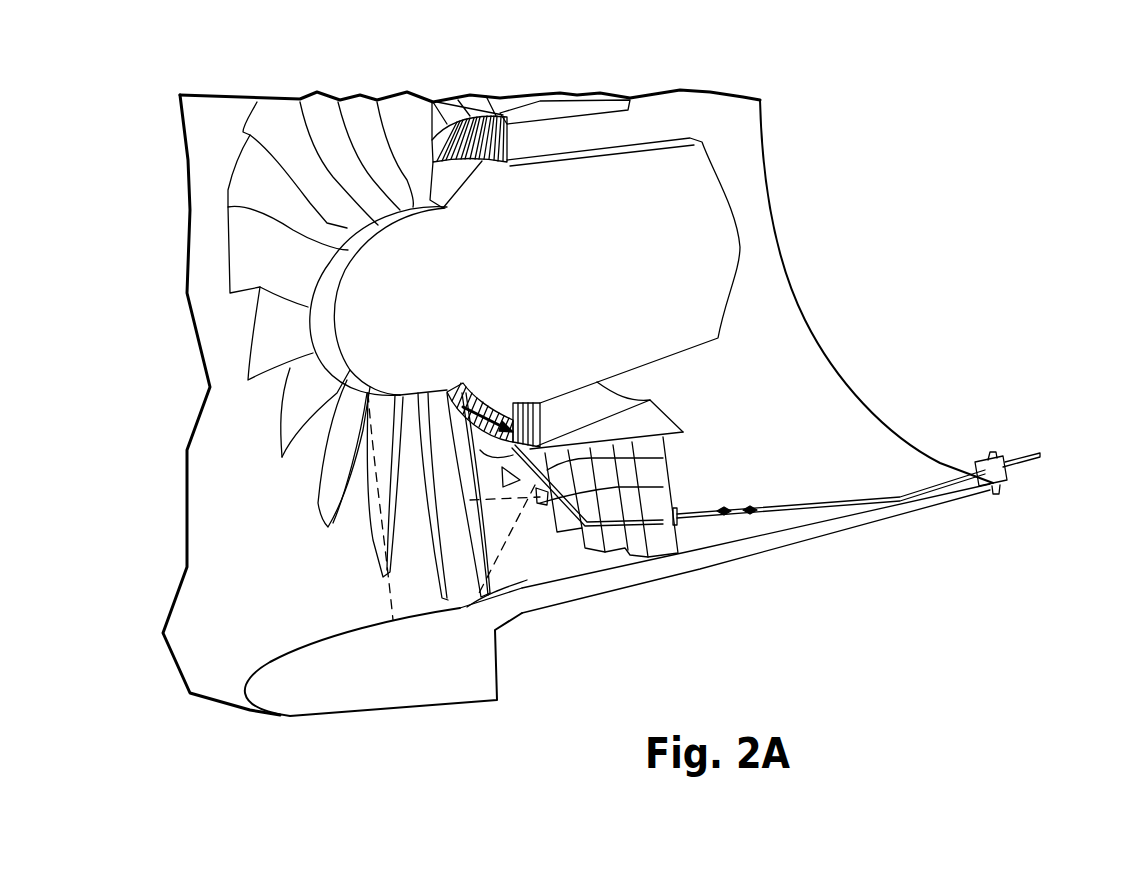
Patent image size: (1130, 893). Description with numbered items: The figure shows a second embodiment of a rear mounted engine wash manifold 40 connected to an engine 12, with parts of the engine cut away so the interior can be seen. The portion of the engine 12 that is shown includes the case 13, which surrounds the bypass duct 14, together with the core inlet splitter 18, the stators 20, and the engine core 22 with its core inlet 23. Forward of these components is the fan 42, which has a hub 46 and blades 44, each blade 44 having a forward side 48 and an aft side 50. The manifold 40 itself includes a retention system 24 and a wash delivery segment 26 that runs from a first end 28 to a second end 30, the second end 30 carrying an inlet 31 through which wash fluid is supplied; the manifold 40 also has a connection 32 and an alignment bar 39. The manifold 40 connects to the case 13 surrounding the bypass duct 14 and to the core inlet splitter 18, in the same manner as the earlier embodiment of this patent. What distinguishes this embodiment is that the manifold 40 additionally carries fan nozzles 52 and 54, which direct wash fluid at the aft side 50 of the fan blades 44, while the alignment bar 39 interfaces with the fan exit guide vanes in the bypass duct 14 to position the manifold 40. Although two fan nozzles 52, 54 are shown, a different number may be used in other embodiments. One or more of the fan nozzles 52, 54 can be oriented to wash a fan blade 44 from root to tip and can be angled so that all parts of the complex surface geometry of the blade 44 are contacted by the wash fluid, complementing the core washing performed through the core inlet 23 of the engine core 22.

The engine 12 is at (155, 269).
The case 13 is at (822, 535).
The bypass duct 14 is at (603, 556).
The core inlet splitter 18 is at (538, 403).
The stators 20 is at (468, 405).
The engine core 22 is at (525, 274).
The core inlet 23 is at (487, 410).
The retention system 24 is at (999, 508).
The wash delivery segment 26 is at (833, 502).
The first end 28 is at (512, 448).
The second end 30 is at (1028, 472).
The inlet 31 is at (1040, 453).
The connection 32 is at (736, 484).
The alignment bar 39 is at (680, 523).
The rear mounted engine wash manifold 40 is at (930, 402).
The fan 42 is at (222, 319).
The blades 44 is at (373, 556).
The hub 46 is at (228, 190).
The forward side 48 is at (493, 573).
The aft side 50 is at (490, 550).
The fan nozzle 52 is at (663, 458).
The fan nozzle 54 is at (630, 487).